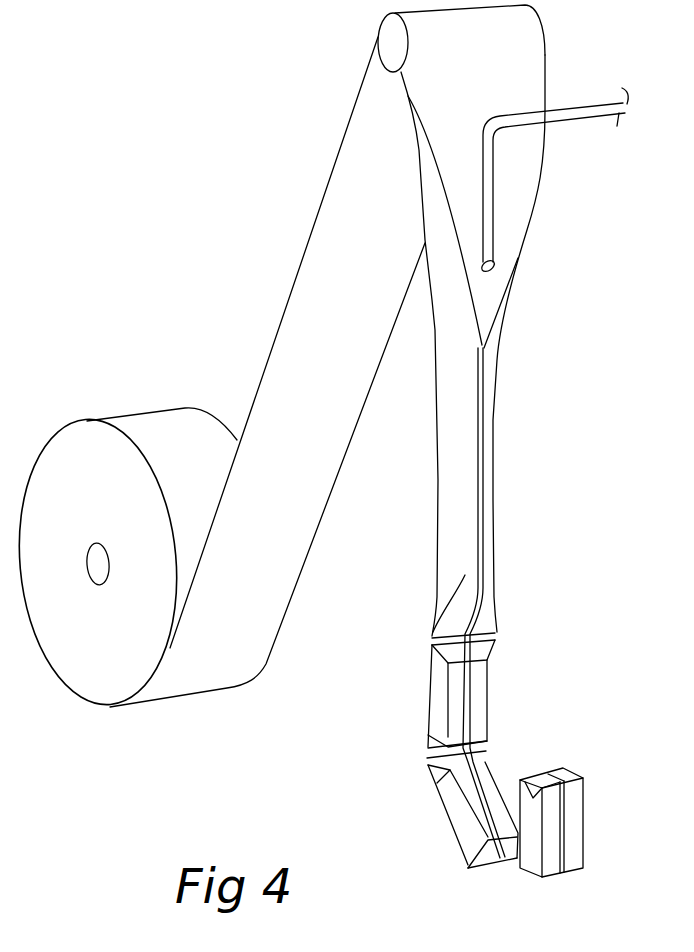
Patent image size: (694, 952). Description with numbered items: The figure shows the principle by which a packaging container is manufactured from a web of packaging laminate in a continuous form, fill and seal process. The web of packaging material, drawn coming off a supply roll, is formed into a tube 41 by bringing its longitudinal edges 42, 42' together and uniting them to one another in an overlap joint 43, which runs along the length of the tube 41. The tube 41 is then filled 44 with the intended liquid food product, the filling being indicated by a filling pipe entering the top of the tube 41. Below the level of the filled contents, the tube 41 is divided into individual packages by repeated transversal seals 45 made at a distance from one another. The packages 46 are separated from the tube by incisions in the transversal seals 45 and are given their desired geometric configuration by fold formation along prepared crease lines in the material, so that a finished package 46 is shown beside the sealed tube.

The tube 41 is at (458, 432).
The longitudinal edge 42 is at (529, 220).
The longitudinal edge 42' is at (521, 265).
The overlap joint 43 is at (478, 372).
The filling 44 is at (582, 110).
The transversal seal 45 is at (490, 635).
The package 46 is at (578, 822).